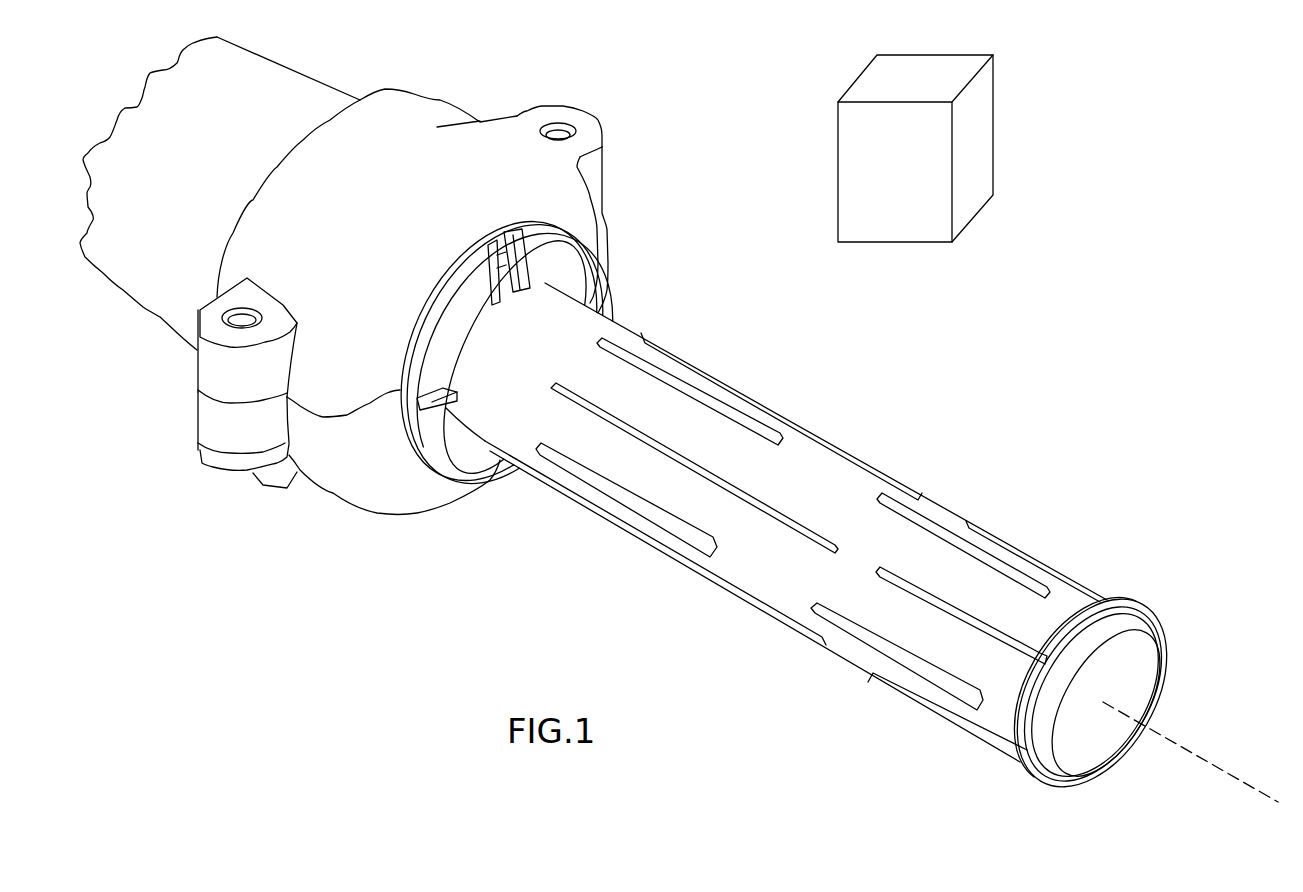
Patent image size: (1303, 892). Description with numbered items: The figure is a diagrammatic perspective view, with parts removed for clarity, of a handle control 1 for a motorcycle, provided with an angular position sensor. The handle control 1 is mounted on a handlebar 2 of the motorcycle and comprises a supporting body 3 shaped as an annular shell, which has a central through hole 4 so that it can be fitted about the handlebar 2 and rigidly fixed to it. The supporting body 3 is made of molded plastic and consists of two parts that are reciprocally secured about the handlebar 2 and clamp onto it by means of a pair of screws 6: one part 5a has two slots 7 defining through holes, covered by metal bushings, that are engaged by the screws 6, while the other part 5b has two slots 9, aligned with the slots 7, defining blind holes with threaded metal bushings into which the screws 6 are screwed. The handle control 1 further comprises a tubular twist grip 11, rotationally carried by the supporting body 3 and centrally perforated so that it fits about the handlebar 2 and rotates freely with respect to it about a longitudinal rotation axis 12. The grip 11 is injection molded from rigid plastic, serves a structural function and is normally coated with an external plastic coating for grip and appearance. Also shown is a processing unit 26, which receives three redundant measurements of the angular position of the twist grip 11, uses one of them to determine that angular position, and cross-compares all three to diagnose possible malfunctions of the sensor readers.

The handle control 1 is at (1102, 340).
The handlebar 2 is at (280, 83).
The supporting body 3 is at (255, 517).
The central through hole 4 is at (563, 277).
The part 5a is at (370, 493).
The part 5b is at (437, 127).
The screws 6 is at (220, 467).
The slots 7 is at (215, 425).
The slots 9 is at (210, 366).
The twist grip 11 is at (868, 482).
The longitudinal rotation axis 12 is at (1195, 750).
The processing unit 26 is at (977, 170).